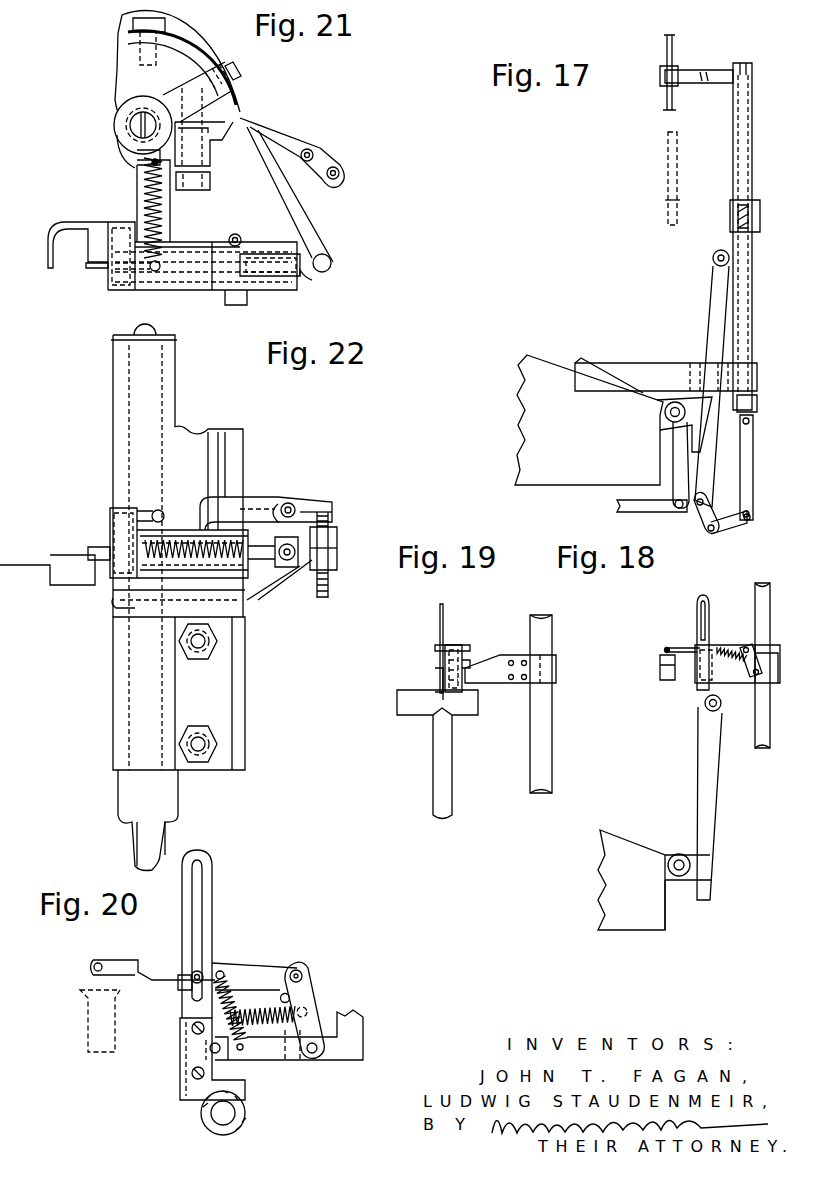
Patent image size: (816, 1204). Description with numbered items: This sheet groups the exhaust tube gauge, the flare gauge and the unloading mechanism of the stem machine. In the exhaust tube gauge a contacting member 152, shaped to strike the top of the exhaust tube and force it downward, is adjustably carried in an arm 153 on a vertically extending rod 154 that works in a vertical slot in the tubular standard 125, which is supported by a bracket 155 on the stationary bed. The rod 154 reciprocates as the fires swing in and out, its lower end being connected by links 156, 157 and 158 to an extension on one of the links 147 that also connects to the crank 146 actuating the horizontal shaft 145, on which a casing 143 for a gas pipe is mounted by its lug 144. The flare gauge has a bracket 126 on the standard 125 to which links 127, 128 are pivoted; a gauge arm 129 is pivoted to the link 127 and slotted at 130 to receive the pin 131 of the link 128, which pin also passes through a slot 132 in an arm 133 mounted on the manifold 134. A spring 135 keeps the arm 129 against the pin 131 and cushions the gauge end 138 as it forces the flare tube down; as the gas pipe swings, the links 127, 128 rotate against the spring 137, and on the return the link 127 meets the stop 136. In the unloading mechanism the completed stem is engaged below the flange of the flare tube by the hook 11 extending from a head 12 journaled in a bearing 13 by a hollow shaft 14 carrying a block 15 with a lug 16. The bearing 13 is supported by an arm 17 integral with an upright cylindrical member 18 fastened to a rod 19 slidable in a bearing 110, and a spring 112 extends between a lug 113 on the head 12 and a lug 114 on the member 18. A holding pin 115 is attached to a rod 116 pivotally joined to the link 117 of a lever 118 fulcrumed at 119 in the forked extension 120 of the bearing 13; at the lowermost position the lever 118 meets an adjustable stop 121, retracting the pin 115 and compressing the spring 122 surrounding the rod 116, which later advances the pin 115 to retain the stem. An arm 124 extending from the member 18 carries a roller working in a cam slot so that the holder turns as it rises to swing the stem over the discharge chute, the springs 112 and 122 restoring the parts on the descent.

In FIG. 21, the hook 11 is at (48, 259).
In FIG. 22, the hook 11 is at (65, 555).
In FIG. 21, the head 12 is at (115, 224).
In FIG. 22, the head 12 is at (112, 508).
In FIG. 21, the bearing 13 is at (192, 243).
In FIG. 22, the bearing 13 is at (192, 554).
In FIG. 21, the hollow shaft 14 is at (200, 250).
In FIG. 21, the block 15 is at (238, 240).
In FIG. 21, the lug 16 is at (240, 300).
In FIG. 21, the arm 17 is at (172, 218).
In FIG. 21, the upright cylindrical member 18 is at (118, 129).
In FIG. 22, the upright cylindrical member 18 is at (116, 420).
In FIG. 22, the rod 19 is at (118, 610).
In FIG. 21, the bearing 110 is at (124, 80).
In FIG. 22, the bearing 110 is at (118, 700).
In FIG. 21, the spring 112 is at (143, 192).
In FIG. 22, the spring 112 is at (158, 510).
In FIG. 21, the lug 113 is at (149, 272).
In FIG. 22, the lug 113 is at (143, 510).
In FIG. 21, the lug 114 is at (152, 160).
In FIG. 21, the holding pin 115 is at (95, 272).
In FIG. 22, the holding pin 115 is at (97, 547).
In FIG. 21, the rod 116 is at (193, 268).
In FIG. 22, the rod 116 is at (195, 570).
In FIG. 22, the link 117 is at (295, 567).
In FIG. 21, the lever 118 is at (314, 272).
In FIG. 22, the lever 118 is at (306, 502).
In FIG. 21, the fulcrum 119 is at (288, 280).
In FIG. 22, the fulcrum 119 is at (289, 503).
In FIG. 21, the forked extension 120 is at (268, 286).
In FIG. 22, the forked extension 120 is at (257, 498).
In FIG. 22, the adjustable stop 121 is at (336, 523).
In FIG. 22, the spring 122 is at (188, 538).
In FIG. 21, the arm 124 is at (168, 95).
In FIG. 21, the tubular standard 125 is at (222, 62).
In FIG. 17, the tubular standard 125 is at (734, 174).
In FIG. 19, the tubular standard 125 is at (553, 641).
In FIG. 18, the tubular standard 125 is at (756, 596).
In FIG. 17, the bracket 126 is at (731, 217).
In FIG. 19, the bracket 126 is at (497, 686).
In FIG. 18, the bracket 126 is at (760, 686).
In FIG. 20, the bracket 126 is at (365, 1031).
In FIG. 21, the link 127 is at (228, 106).
In FIG. 19, the link 127 is at (470, 662).
In FIG. 18, the link 127 is at (748, 650).
In FIG. 20, the link 127 is at (310, 1000).
In FIG. 20, the link 128 is at (182, 1015).
In FIG. 21, the gauge arm 129 is at (308, 154).
In FIG. 19, the gauge arm 129 is at (455, 648).
In FIG. 20, the gauge arm 129 is at (257, 968).
In FIG. 21, the slot 130 is at (336, 171).
In FIG. 20, the slot 130 is at (178, 985).
In FIG. 21, the pin 131 is at (281, 131).
In FIG. 19, the pin 131 is at (435, 651).
In FIG. 20, the pin 131 is at (205, 972).
In FIG. 20, the slot 132 is at (197, 917).
In FIG. 19, the arm 133 is at (440, 628).
In FIG. 18, the arm 133 is at (687, 642).
In FIG. 20, the arm 133 is at (208, 896).
In FIG. 17, the manifold 134 is at (713, 258).
In FIG. 19, the manifold 134 is at (420, 705).
In FIG. 20, the manifold 134 is at (247, 1119).
In FIG. 20, the spring 135 is at (238, 1012).
In FIG. 20, the stop 136 is at (290, 998).
In FIG. 20, the spring 137 is at (268, 1032).
In FIG. 20, the gauge end 138 is at (110, 963).
In FIG. 17, the casing 143 is at (708, 305).
In FIG. 19, the casing 143 is at (437, 783).
In FIG. 18, the casing 143 is at (700, 780).
In FIG. 18, the lug 144 is at (698, 855).
In FIG. 17, the shaft 145 is at (664, 413).
In FIG. 18, the shaft 145 is at (668, 868).
In FIG. 17, the crank 146 is at (682, 460).
In FIG. 17, the link 147 is at (645, 512).
In FIG. 17, the contacting member 152 is at (667, 96).
In FIG. 17, the arm 153 is at (700, 70).
In FIG. 17, the rod 154 is at (734, 136).
In FIG. 17, the bracket 155 is at (655, 355).
In FIG. 17, the link 156 is at (752, 470).
In FIG. 17, the link 157 is at (738, 528).
In FIG. 17, the link 158 is at (705, 523).